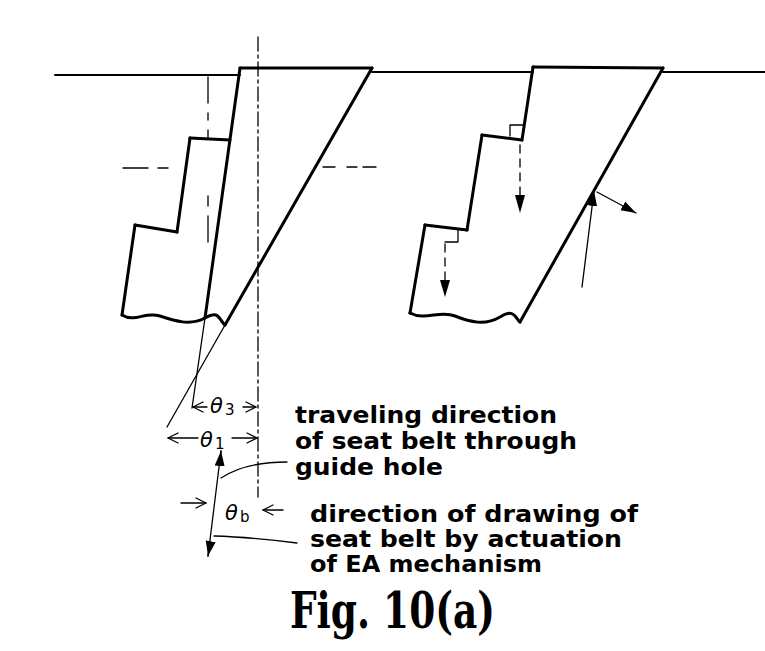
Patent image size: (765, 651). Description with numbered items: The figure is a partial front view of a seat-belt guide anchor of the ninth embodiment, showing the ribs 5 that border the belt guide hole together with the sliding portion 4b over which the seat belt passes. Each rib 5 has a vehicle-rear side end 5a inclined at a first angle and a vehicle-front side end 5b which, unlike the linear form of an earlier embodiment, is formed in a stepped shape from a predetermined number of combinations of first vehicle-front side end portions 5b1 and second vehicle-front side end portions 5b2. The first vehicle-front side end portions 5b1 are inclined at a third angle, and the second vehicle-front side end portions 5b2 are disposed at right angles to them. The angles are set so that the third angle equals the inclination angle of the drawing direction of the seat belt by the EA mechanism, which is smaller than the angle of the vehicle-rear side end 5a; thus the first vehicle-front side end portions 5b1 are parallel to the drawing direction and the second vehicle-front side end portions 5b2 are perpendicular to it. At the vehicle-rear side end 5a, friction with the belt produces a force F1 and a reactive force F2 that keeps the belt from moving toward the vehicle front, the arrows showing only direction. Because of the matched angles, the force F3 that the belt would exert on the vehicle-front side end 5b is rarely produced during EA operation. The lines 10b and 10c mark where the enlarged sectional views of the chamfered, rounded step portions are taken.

The rib 5 is at (310, 82).
The vehicle-rear side end 5a is at (264, 251).
The vehicle-front side end 5b is at (128, 258).
The first vehicle-front side end portion 5b1 is at (187, 155).
The second vehicle-front side end portion 5b2 is at (210, 138).
The sliding portion 4b is at (405, 142).
The line 10b— 10b is at (130, 169).
The line 10c— 10c is at (207, 84).
The force F1 is at (580, 251).
The reactive force F2 is at (629, 215).
The force F3 is at (482, 228).